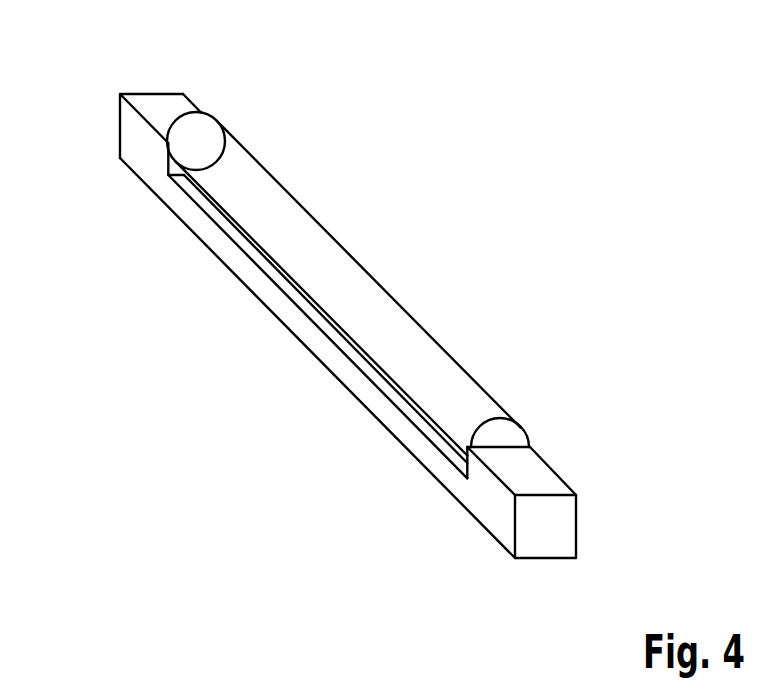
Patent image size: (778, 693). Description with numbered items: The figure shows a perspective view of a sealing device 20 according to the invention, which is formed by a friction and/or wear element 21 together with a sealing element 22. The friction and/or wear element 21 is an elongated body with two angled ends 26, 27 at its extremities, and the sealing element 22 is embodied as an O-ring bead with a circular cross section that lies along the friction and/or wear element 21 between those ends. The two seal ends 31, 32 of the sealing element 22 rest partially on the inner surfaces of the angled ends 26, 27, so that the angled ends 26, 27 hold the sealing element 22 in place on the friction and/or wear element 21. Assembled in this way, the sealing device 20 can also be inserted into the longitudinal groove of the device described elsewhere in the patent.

The sealing device 20 is at (346, 282).
The friction and/or wear element 21 is at (547, 453).
The sealing element 22 is at (348, 285).
The angled end 26 is at (138, 135).
The angled end 27 is at (542, 483).
The seal end 31 is at (181, 106).
The seal end 32 is at (507, 440).